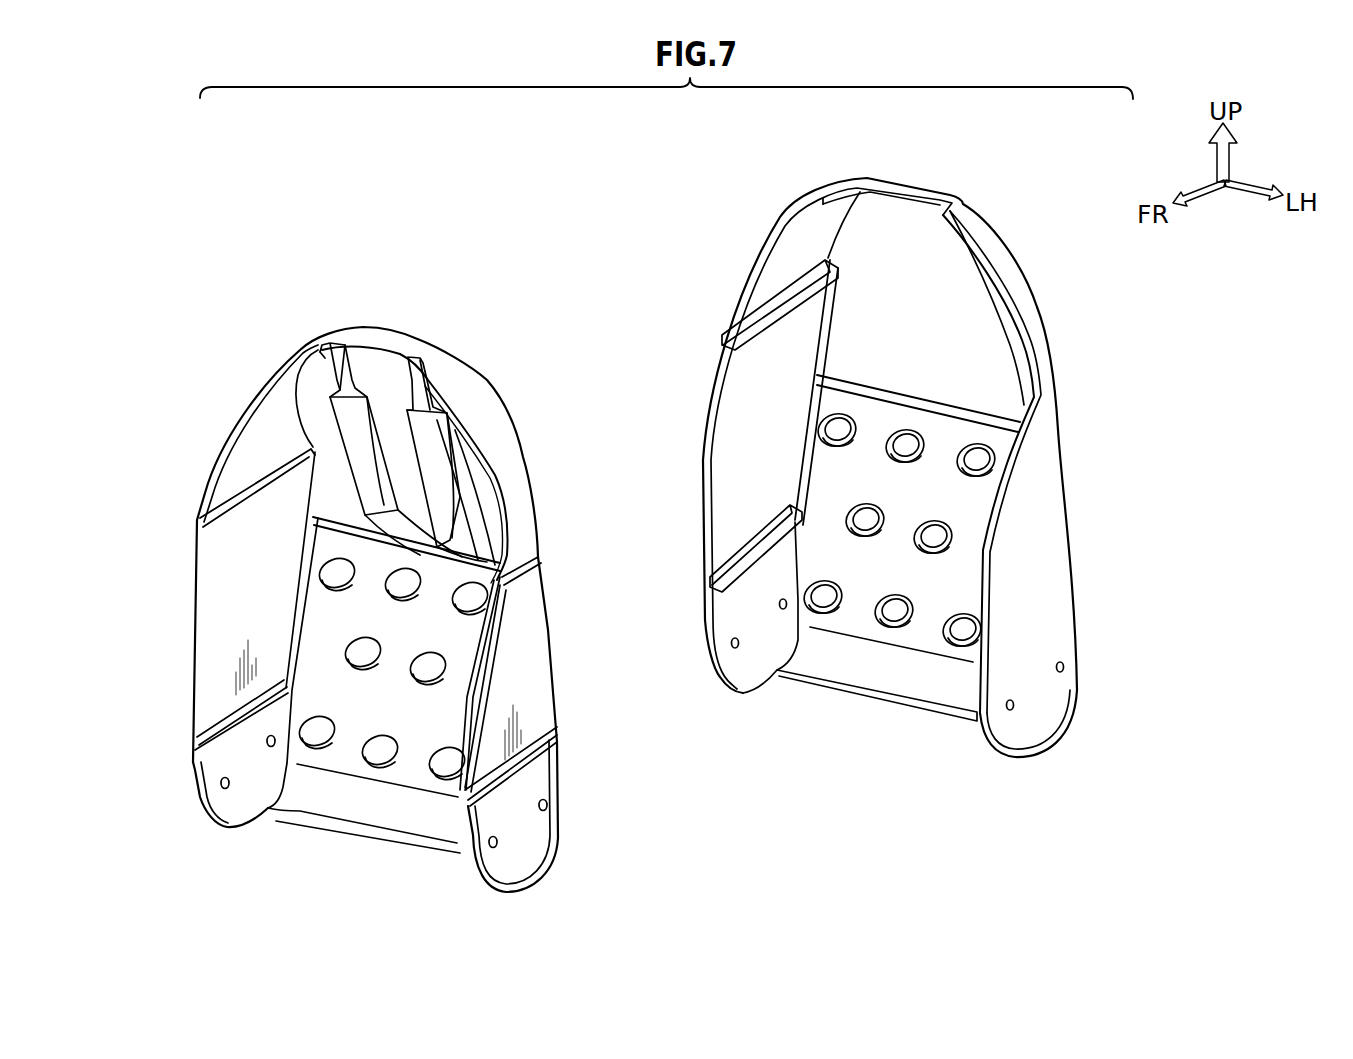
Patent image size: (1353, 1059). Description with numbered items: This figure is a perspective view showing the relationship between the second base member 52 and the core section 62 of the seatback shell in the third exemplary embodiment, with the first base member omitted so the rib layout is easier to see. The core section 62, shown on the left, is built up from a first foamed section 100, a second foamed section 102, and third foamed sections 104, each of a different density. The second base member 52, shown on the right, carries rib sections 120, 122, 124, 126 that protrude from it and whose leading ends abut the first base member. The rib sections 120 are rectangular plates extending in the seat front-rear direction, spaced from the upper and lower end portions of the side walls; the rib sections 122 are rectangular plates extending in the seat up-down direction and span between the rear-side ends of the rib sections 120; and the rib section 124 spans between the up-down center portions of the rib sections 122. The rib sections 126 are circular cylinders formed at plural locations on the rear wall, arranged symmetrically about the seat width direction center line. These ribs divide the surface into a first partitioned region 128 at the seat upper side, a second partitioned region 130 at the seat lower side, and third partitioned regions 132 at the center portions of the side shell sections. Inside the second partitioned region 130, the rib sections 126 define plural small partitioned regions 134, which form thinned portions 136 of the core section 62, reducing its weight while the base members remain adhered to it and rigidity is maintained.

The second base member 52 is at (1060, 231).
The core section 62 is at (466, 306).
The first foamed section 100 is at (480, 400).
The second foamed section 102 is at (533, 857).
The third foamed sections 104 is at (228, 650).
The rib sections 120 is at (762, 313).
The rib sections 122 is at (808, 340).
The rib section 124 is at (917, 397).
The rib sections 126 is at (838, 590).
The first partitioned region 128 is at (913, 273).
The second partitioned region 130 is at (930, 640).
The third partitioned regions 132 is at (728, 437).
The small partitioned regions 134 is at (838, 727).
The thinned portions 136 is at (425, 682).